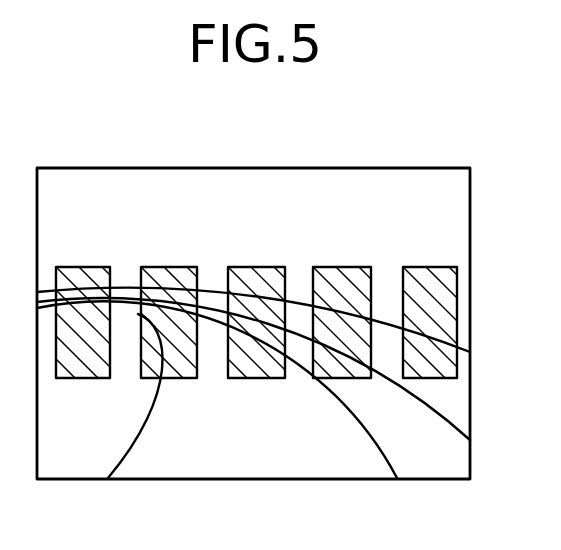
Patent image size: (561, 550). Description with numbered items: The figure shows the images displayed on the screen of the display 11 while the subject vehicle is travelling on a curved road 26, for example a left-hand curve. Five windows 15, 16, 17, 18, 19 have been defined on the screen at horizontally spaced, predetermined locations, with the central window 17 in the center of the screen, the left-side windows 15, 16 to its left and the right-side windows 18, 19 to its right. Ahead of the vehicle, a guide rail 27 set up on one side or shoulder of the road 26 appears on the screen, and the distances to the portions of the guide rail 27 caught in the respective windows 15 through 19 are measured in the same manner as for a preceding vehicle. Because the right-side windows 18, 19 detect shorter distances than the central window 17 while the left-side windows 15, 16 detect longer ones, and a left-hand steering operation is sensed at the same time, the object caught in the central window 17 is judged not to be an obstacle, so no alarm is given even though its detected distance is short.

The display 11 is at (474, 272).
The window 15 is at (85, 267).
The window 16 is at (170, 267).
The central window 17 is at (258, 267).
The window 18 is at (342, 267).
The window 19 is at (433, 267).
The curved road 26 is at (334, 463).
The guide rail 27 is at (387, 340).